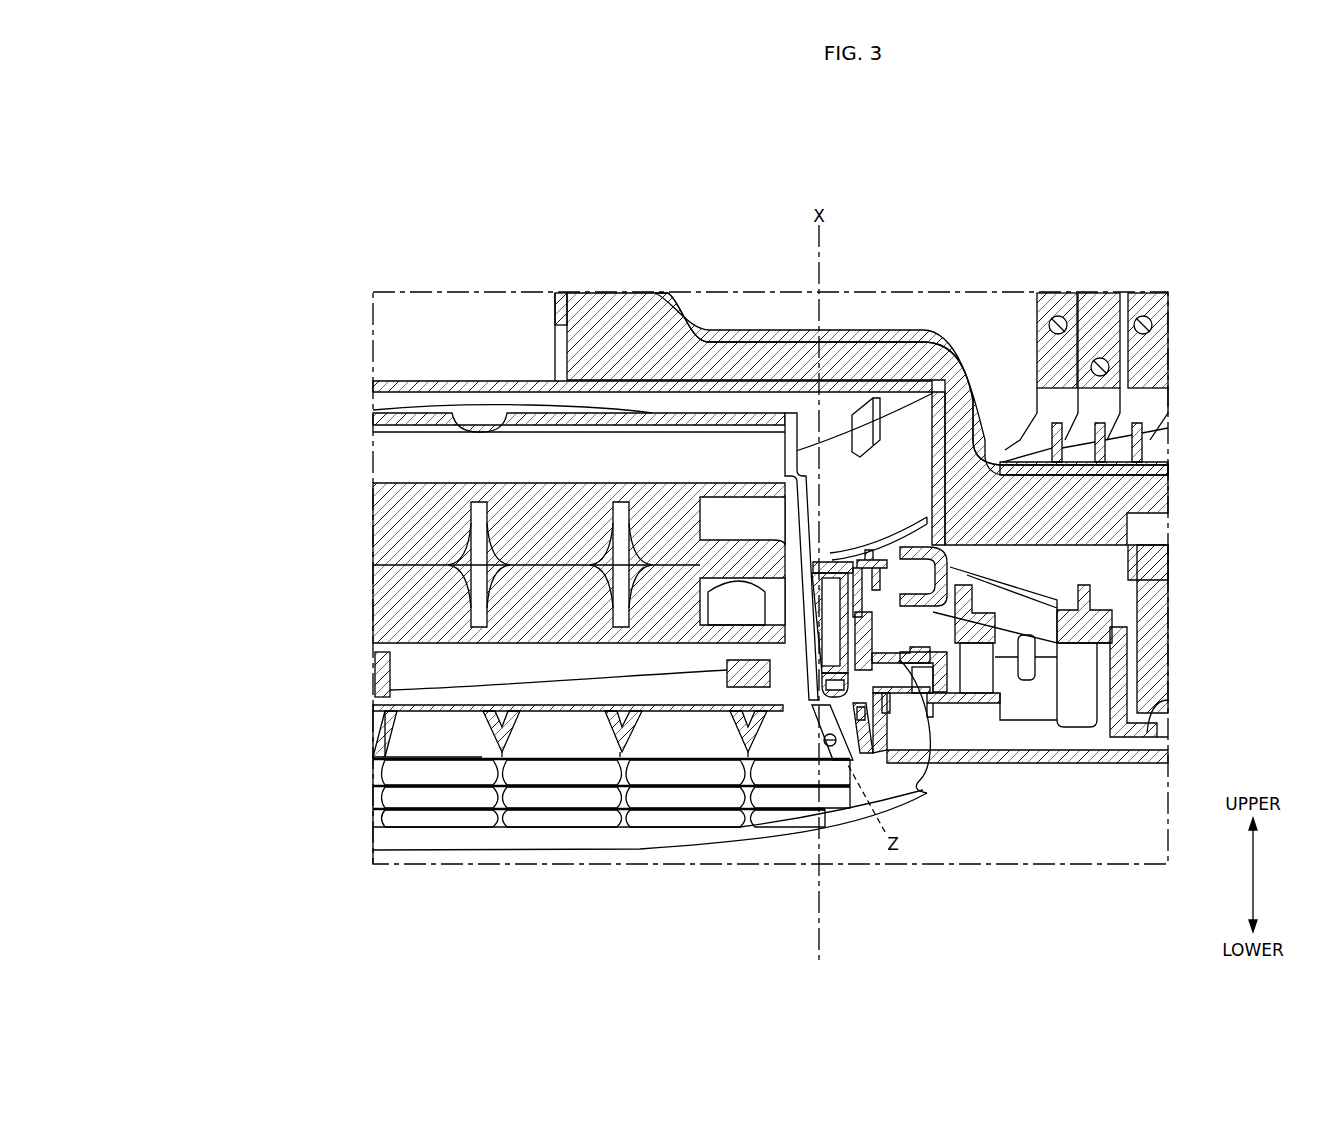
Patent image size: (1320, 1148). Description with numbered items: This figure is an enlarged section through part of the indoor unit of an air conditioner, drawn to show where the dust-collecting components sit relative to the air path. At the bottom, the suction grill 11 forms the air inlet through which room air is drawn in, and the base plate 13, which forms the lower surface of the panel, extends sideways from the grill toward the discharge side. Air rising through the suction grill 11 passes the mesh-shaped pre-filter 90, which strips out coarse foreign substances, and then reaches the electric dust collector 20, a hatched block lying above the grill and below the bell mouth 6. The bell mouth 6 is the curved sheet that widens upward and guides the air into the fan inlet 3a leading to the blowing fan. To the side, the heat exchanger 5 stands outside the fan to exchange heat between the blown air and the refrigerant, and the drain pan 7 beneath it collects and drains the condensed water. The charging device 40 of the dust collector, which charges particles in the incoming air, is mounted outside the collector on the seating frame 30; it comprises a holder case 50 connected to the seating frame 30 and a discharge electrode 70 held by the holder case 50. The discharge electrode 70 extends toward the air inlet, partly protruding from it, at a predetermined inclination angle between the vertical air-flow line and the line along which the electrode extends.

The fan inlet 3a is at (436, 347).
The heat exchanger 5 is at (1145, 365).
The bell mouth 6 is at (673, 300).
The drain pan 7 is at (1167, 485).
The suction grill 11 is at (412, 838).
The base plate 13 is at (1076, 762).
The electric dust collector 20 is at (386, 520).
The seating frame 30 is at (927, 793).
The charging device 40 is at (900, 912).
The holder case 50 is at (860, 720).
The discharge electrode 70 is at (836, 700).
The pre-filter 90 is at (400, 698).